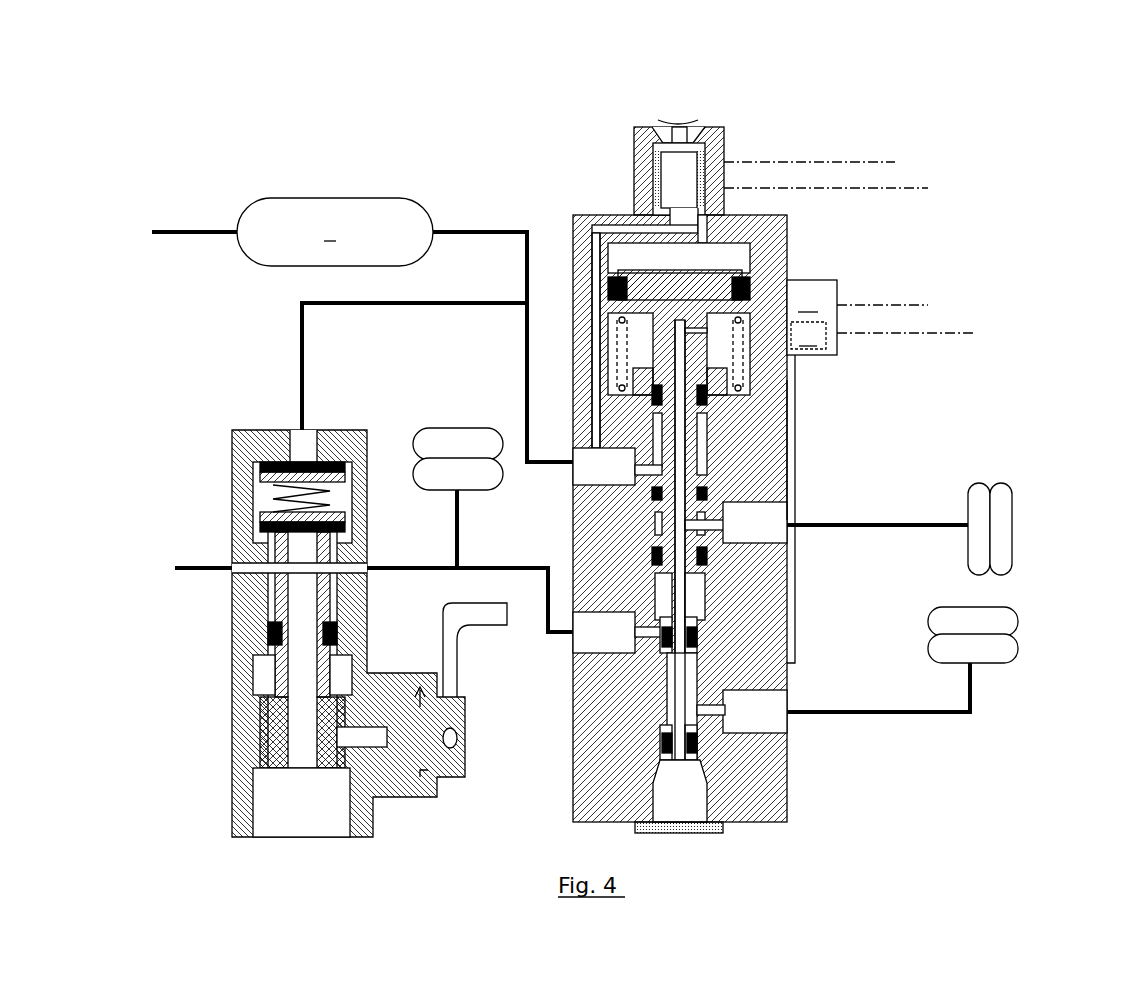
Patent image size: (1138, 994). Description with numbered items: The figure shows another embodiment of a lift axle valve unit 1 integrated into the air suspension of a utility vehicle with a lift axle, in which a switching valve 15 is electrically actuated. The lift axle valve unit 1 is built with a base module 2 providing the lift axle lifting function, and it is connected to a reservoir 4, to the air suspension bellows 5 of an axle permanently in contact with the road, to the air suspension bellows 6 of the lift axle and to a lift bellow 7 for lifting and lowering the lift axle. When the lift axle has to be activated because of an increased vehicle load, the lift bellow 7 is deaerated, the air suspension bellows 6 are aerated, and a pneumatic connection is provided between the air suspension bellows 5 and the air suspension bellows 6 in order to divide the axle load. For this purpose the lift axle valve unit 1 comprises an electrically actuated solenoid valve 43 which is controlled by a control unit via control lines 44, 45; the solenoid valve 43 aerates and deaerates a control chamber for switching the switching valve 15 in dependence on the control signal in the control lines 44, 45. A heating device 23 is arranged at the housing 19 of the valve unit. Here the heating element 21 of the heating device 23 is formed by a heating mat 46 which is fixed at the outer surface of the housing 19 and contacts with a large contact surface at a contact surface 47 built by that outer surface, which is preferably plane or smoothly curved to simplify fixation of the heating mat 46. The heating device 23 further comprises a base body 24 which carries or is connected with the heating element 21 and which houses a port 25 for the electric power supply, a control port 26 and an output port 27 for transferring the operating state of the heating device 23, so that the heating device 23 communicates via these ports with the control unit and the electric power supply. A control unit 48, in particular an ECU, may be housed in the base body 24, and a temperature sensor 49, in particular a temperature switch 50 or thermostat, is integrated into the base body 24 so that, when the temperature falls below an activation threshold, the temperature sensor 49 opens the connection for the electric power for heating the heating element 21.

The lift axle valve unit 1 is at (666, 470).
The base module 2 is at (666, 470).
The reservoir 4 is at (292, 232).
The air suspension bellows 5 is at (456, 445).
The air suspension bellows 6 is at (990, 610).
The lift bellow 7 is at (1001, 521).
The switching valve 15 is at (731, 246).
The housing 19 is at (752, 805).
The heating element 21 is at (839, 509).
The heating device 23 is at (850, 293).
The base body 24 is at (808, 303).
The port 25 is at (906, 340).
The control port 26 is at (906, 340).
The output port 27 is at (837, 305).
The solenoid valve 43 is at (690, 172).
The control line 44 is at (814, 162).
The control line 45 is at (861, 189).
The heating mat 46 is at (795, 405).
The contact surface 47 is at (787, 452).
The control unit 48 is at (808, 335).
The temperature sensor 49 is at (850, 293).
The temperature switch 50 is at (850, 293).